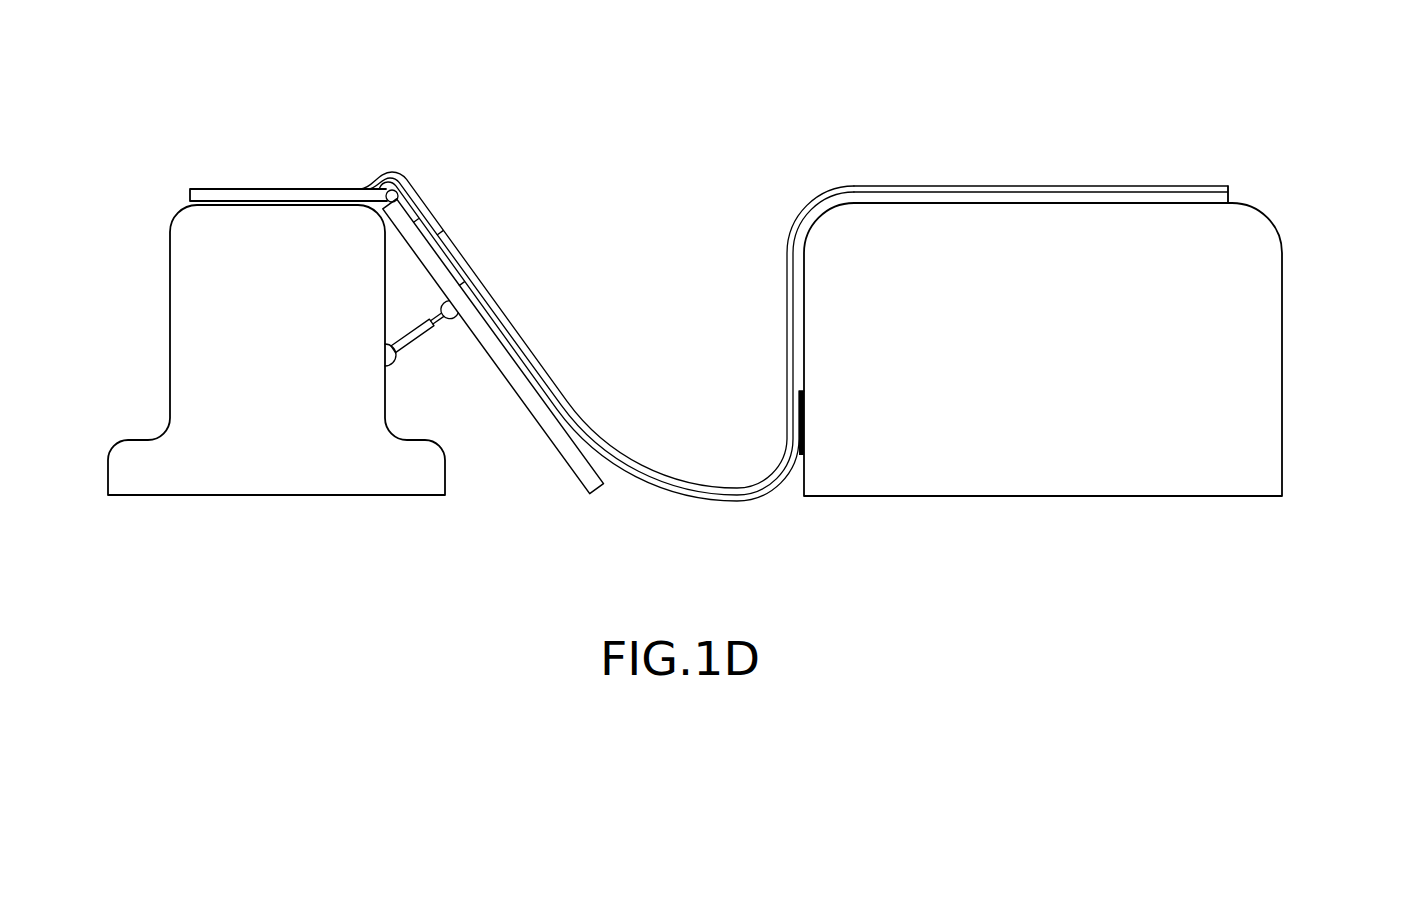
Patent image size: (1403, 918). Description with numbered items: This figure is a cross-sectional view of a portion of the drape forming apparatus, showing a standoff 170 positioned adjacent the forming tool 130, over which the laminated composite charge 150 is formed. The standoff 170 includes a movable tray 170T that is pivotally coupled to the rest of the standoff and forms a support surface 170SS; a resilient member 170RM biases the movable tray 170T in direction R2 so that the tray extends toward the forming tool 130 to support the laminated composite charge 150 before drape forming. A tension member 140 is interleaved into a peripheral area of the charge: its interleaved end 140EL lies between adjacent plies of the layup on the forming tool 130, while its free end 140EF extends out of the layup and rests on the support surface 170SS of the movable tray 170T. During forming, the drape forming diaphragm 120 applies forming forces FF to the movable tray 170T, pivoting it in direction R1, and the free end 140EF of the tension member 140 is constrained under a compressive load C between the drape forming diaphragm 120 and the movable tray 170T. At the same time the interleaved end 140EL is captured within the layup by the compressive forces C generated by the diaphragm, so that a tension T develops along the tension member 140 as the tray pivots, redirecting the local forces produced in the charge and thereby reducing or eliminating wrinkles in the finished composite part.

The drape forming diaphragm 120 is at (990, 188).
The forming tool 130 is at (1283, 356).
The tension member 140 is at (738, 503).
The free end 140EF is at (479, 289).
The interleaved end 140EL is at (808, 406).
The laminated composite charge 150 is at (1224, 198).
The standoff 170 is at (168, 303).
The support surface 170SS is at (552, 405).
The resilient member 170RM is at (423, 333).
The movable tray 170T is at (601, 490).
The pivot direction R1 is at (438, 172).
The bias direction R2 is at (318, 110).
The compressive load C is at (510, 323).
The forming forces FF is at (699, 448).
The tension direction T is at (721, 532).